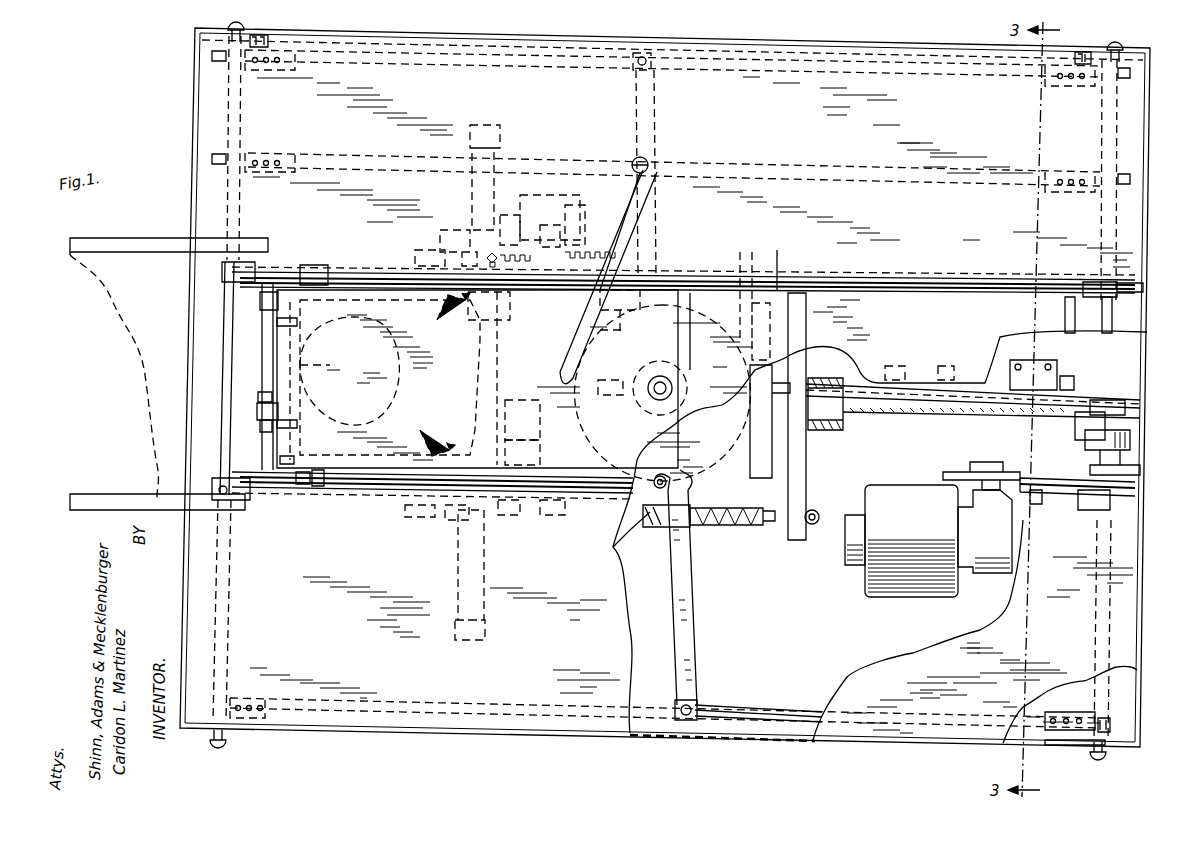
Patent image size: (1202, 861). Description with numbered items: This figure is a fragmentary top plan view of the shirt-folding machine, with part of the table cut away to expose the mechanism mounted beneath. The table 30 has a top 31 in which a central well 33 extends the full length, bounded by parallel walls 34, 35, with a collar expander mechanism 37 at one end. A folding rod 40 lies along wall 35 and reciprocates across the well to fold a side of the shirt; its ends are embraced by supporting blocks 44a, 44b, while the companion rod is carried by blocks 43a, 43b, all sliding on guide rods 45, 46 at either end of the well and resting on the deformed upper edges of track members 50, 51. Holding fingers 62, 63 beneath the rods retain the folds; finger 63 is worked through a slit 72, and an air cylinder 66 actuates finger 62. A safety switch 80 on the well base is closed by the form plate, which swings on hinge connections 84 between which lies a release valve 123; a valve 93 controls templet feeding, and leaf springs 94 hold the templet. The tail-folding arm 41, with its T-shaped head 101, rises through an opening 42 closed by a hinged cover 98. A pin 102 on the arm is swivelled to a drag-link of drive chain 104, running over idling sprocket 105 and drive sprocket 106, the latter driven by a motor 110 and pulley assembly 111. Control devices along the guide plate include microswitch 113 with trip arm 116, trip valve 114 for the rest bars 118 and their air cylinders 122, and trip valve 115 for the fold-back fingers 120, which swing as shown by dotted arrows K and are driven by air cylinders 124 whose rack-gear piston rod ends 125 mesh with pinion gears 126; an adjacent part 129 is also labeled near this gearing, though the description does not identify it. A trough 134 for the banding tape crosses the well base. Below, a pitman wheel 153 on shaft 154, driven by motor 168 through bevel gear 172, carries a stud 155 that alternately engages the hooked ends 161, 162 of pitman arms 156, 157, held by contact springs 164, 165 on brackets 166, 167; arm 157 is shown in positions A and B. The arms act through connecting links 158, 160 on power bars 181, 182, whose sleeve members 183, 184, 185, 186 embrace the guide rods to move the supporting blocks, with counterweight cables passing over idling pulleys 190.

The table top 31 is at (800, 52).
The well 33 is at (207, 312).
The table 30 is at (352, 490).
The well wall 34 is at (330, 490).
The well wall 35 is at (382, 270).
The collar expander mechanism 37 is at (385, 388).
The folding rod 40 is at (340, 280).
The tail-folding arm 41 is at (755, 476).
The opening 42 is at (777, 255).
The supporting block 43a is at (222, 480).
The supporting block 43b is at (1110, 502).
The supporting block 44a is at (222, 270).
The supporting block 44b is at (1143, 289).
The guide rod 45 is at (228, 345).
The guide rod 46 is at (1112, 318).
The track member 50 is at (262, 365).
The track member 51 is at (1058, 307).
The holding finger 62 is at (316, 488).
The holding finger 63 is at (316, 265).
The air cylinder 66 is at (812, 525).
The slit 72 is at (806, 448).
The safety switch 80 is at (300, 486).
The hinge connection 84 is at (262, 303).
The valve 93 is at (258, 402).
The leaf spring 94 is at (296, 323).
The hinged cover 98 is at (748, 265).
The head 101 is at (750, 428).
The pin 102 is at (1078, 422).
The drive chain 104 is at (940, 414).
The idling sprocket 105 is at (845, 422).
The drive sprocket 106 is at (1128, 425).
The motor 110 is at (893, 488).
The pulley assembly 111 is at (1012, 470).
The microswitch 113 is at (1012, 360).
The trip valve 114 is at (945, 364).
The trip valve 115 is at (902, 364).
The trip arm 116 is at (1068, 380).
The rest bar 118 is at (462, 232).
The fold-back finger 120 is at (420, 250).
The air cylinder 122 is at (490, 128).
The release valve 123 is at (312, 360).
The air cylinder 124 is at (548, 518).
The piston rod end 125 is at (508, 232).
The pinion gear 126 is at (530, 292).
The block 129 is at (572, 225).
The trough 134 is at (520, 416).
The pitman wheel 153 is at (580, 438).
The shaft 154 is at (688, 388).
The stud 155 is at (620, 540).
The pitman arm 156 is at (695, 630).
The pitman arm 157 is at (658, 118).
The connecting link 158 is at (698, 707).
The connecting link 160 is at (633, 72).
The hooked end 161 is at (680, 487).
The hooked end 162 is at (625, 330).
The contact spring 164 is at (745, 527).
The contact spring 165 is at (600, 250).
The bracket 166 is at (705, 527).
The bracket 167 is at (548, 235).
The motor 168 is at (548, 200).
The bevel gear 172 is at (600, 388).
The power bar 181 is at (377, 700).
The power bar 182 is at (422, 66).
The sleeve member 183 is at (228, 585).
The sleeve member 184 is at (1108, 591).
The sleeve member 185 is at (228, 101).
The sleeve member 186 is at (1120, 107).
The idling pulley 190 is at (268, 35).
The position A is at (657, 158).
The position B is at (565, 340).
The arrow K is at (442, 374).